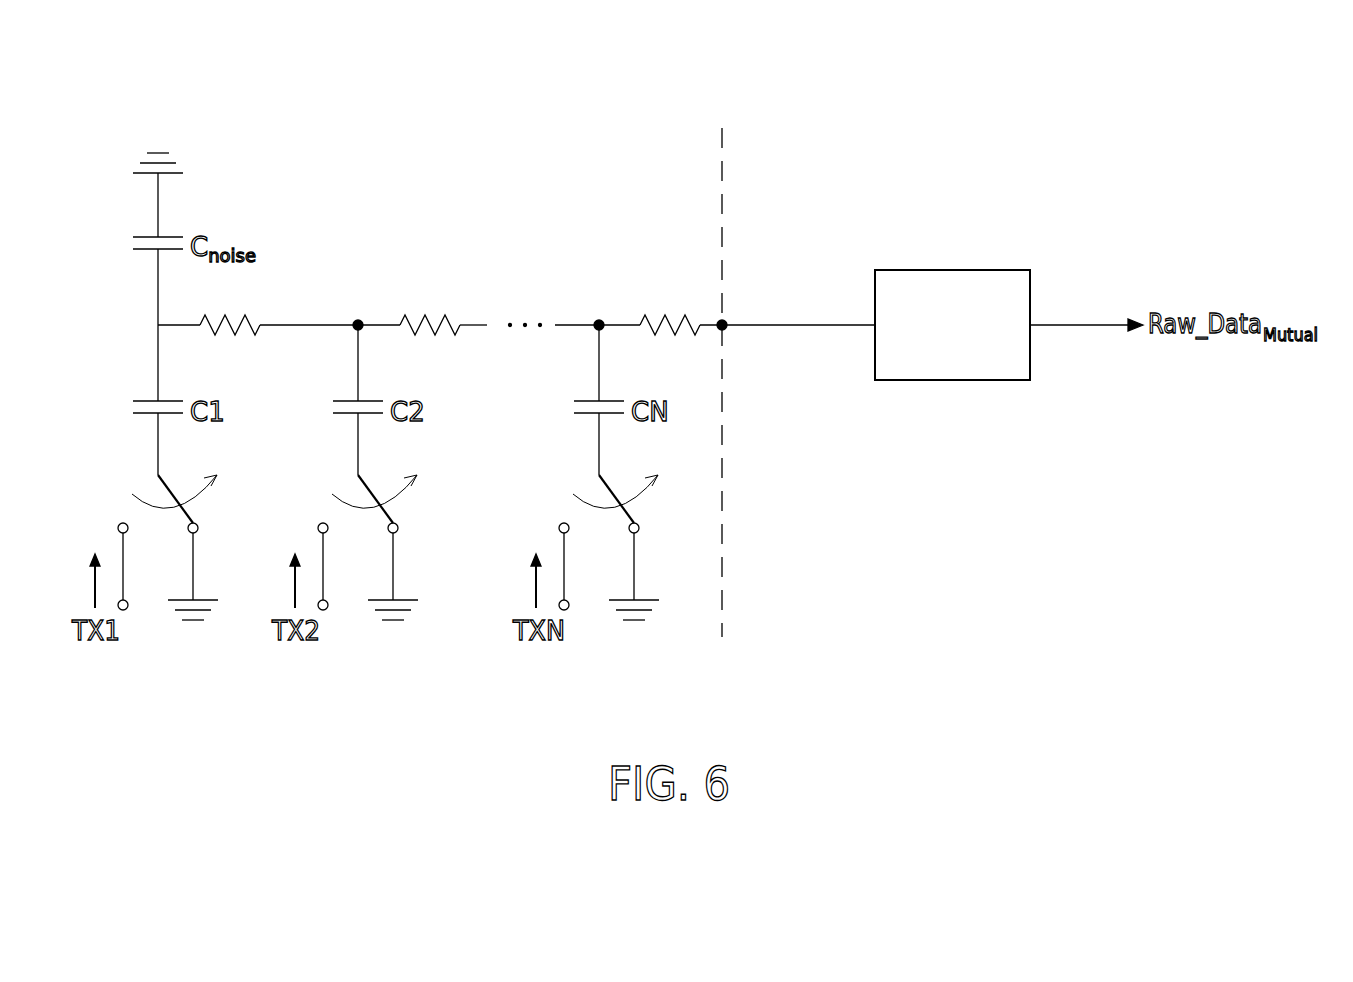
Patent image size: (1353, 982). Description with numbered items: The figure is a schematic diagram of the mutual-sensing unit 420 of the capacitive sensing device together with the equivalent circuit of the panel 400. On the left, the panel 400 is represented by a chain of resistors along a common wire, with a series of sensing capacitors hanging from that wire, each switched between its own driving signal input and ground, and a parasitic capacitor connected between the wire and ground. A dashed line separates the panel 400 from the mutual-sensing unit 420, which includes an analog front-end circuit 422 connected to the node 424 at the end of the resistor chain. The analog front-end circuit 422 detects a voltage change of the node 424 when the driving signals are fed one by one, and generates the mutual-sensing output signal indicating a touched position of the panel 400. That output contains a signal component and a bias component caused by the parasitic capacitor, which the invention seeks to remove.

The panel 400 is at (566, 155).
The mutual-sensing unit 420 is at (877, 155).
The analog front-end circuit 422 is at (1010, 270).
The node 424 is at (726, 320).